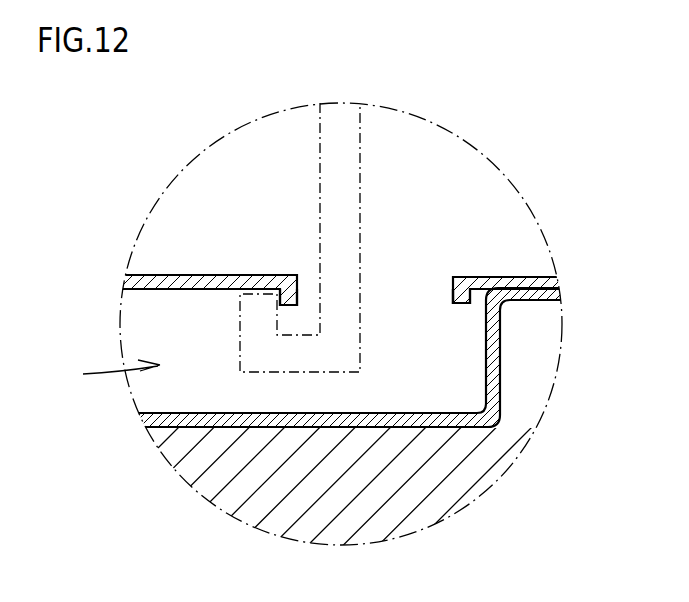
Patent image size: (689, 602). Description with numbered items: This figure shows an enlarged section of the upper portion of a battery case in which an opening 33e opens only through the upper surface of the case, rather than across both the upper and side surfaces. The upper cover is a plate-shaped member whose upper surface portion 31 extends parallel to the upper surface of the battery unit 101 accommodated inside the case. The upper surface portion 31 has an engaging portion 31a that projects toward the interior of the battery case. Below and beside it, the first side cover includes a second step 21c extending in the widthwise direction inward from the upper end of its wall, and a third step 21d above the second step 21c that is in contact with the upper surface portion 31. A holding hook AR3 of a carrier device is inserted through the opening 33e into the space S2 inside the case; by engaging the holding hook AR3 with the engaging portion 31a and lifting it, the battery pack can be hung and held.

The holding hook AR3 is at (320, 158).
The upper surface portion 31 is at (537, 277).
The engaging portion 31a is at (302, 286).
The opening 33e is at (453, 298).
The second step 21c is at (438, 415).
The third step 21d is at (545, 300).
The battery unit 101 is at (467, 467).
The space S2 is at (106, 372).